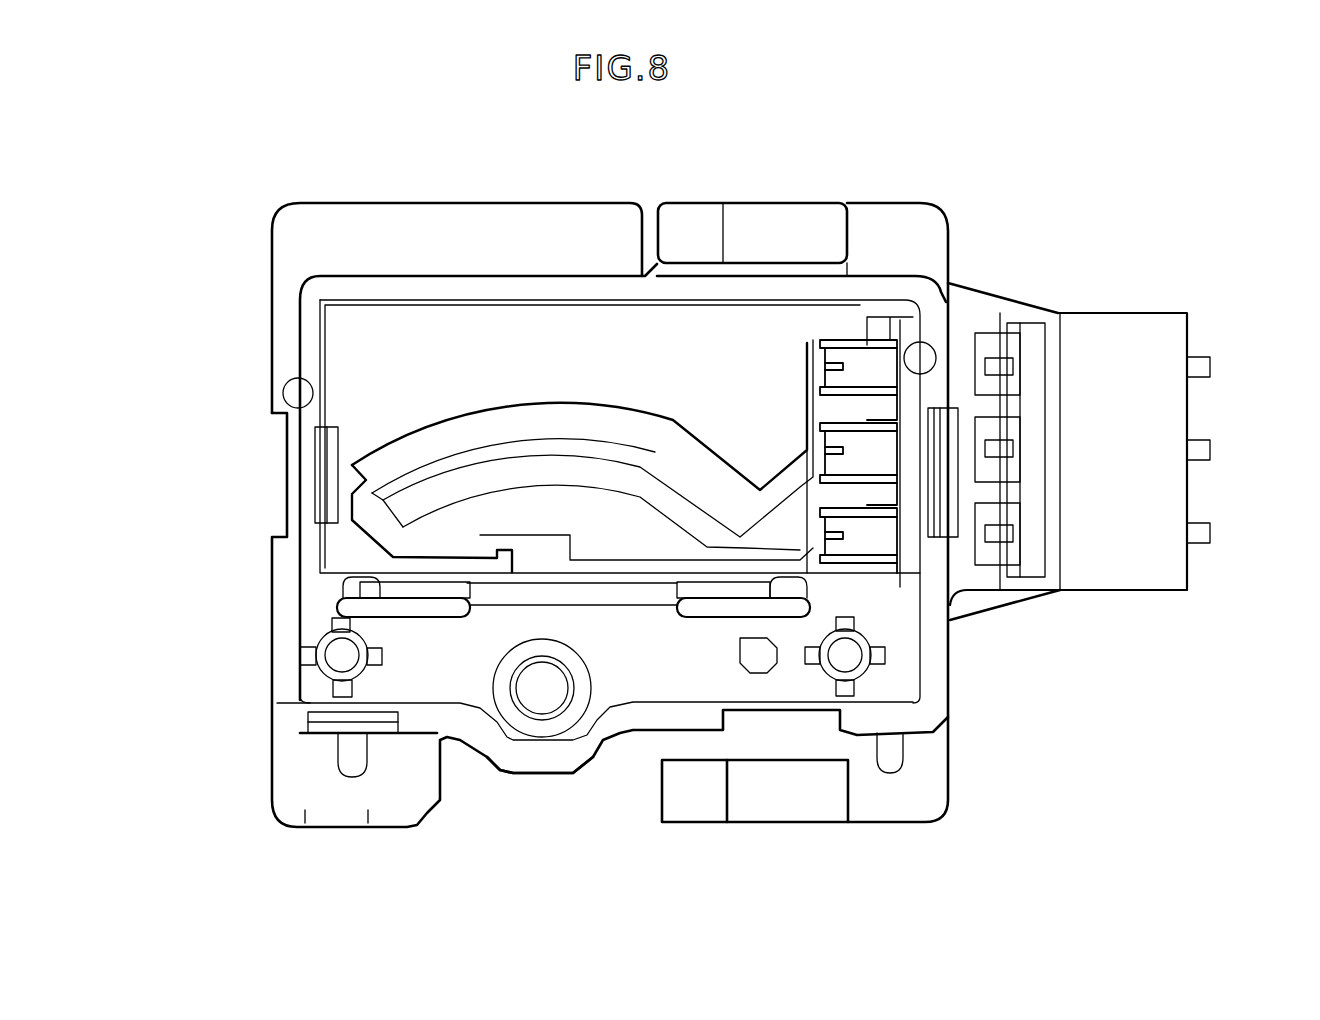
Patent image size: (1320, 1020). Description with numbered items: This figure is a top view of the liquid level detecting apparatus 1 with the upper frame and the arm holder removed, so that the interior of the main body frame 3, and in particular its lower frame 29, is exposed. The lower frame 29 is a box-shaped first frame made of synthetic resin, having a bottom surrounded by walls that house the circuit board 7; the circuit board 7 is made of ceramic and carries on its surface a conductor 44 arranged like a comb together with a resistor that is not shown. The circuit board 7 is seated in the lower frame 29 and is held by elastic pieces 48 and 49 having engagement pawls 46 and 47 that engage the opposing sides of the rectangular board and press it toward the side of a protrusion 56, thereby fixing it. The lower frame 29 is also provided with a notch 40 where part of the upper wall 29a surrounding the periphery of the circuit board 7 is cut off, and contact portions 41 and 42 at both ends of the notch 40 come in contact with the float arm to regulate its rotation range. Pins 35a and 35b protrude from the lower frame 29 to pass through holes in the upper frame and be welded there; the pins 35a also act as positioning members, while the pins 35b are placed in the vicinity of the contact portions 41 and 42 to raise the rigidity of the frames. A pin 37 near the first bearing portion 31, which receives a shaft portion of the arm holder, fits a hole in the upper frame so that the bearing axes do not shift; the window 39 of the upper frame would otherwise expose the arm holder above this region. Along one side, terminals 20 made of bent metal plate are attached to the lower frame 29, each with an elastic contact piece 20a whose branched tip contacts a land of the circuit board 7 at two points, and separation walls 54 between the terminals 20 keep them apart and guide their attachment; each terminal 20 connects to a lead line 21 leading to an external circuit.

The liquid level detecting apparatus 1 is at (821, 184).
The main body frame 3 is at (362, 288).
The circuit board 7 is at (353, 397).
The terminal 20 is at (1000, 330).
The contact piece 20a is at (855, 368).
The lead line 21 is at (1200, 358).
The lower frame 29 is at (868, 245).
The wall 29a is at (563, 290).
The first bearing portion 31 is at (565, 715).
The pin 35a is at (310, 650).
The pin 35b is at (292, 395).
The pin 37 is at (517, 755).
The window 39 is at (583, 557).
The notch 40 is at (520, 278).
The contact portion 41 is at (310, 387).
The contact portion 42 is at (905, 350).
The conductor 44 is at (593, 468).
The engagement pawl 46 is at (330, 503).
The engagement pawl 47 is at (350, 590).
The elastic piece 48 is at (313, 478).
The elastic piece 49 is at (417, 600).
The separation wall 54 is at (1020, 450).
The protrusion 56 is at (423, 300).